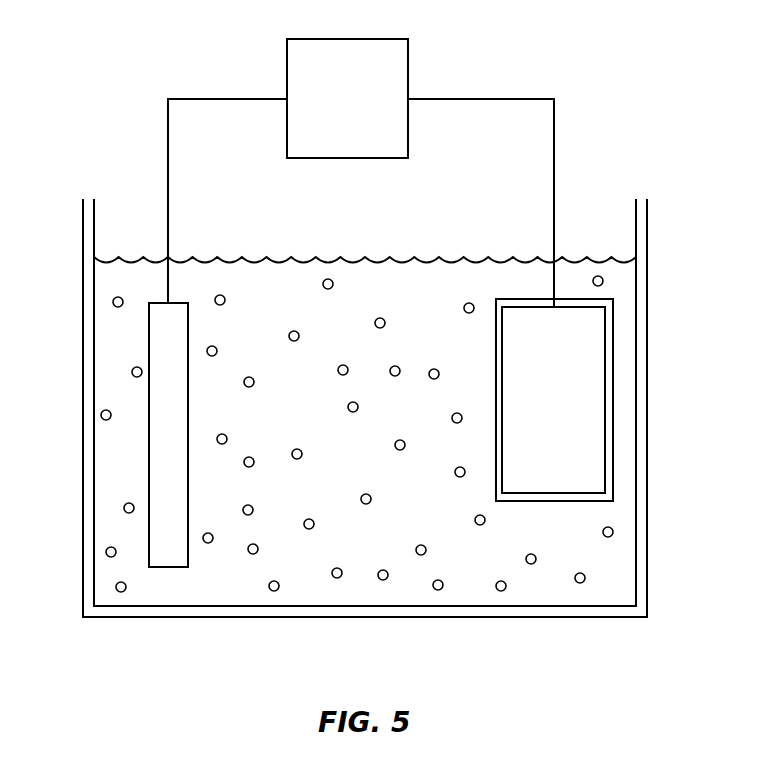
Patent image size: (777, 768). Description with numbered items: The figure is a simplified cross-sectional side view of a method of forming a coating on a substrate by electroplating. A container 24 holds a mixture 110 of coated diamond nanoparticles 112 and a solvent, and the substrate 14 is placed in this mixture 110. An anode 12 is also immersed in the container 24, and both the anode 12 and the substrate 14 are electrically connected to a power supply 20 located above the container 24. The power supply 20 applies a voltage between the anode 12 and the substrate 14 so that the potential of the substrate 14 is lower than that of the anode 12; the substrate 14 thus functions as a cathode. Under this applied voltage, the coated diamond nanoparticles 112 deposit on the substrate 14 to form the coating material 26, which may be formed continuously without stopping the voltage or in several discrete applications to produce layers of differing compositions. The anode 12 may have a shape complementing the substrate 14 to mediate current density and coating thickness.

The anode 12 is at (167, 469).
The substrate 14 is at (580, 420).
The power supply 20 is at (361, 108).
The container 24 is at (642, 230).
The coating material 26 is at (613, 479).
The mixture 110 is at (218, 583).
The coated diamond nanoparticles 112 is at (613, 532).